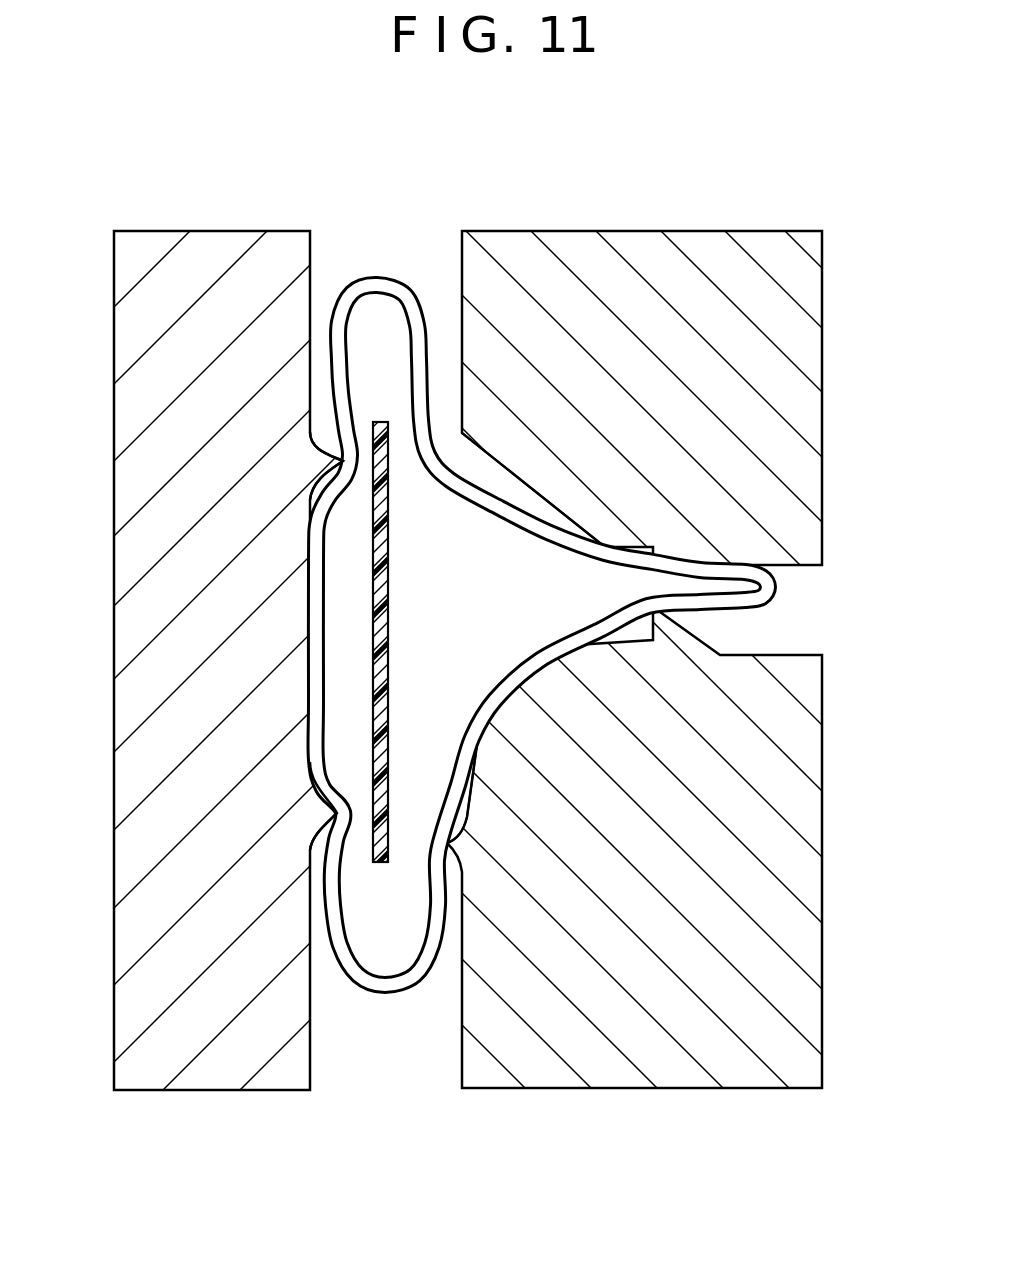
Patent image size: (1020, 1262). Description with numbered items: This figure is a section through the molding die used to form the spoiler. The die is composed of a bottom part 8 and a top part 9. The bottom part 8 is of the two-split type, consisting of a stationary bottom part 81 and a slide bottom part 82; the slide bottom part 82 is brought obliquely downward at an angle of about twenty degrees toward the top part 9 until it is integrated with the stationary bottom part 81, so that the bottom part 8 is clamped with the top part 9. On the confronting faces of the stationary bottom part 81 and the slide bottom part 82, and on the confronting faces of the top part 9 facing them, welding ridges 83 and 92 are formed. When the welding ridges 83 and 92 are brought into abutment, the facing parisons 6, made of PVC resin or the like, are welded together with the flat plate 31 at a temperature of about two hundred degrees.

The parison 6 is at (383, 278).
The bottom part 8 is at (510, 606).
The top part 9 is at (213, 231).
The flat plate 31 is at (390, 622).
The stationary bottom part 81 is at (748, 353).
The slide bottom part 82 is at (748, 831).
The welding ridge 83 is at (450, 460).
The welding ridge 92 is at (330, 462).